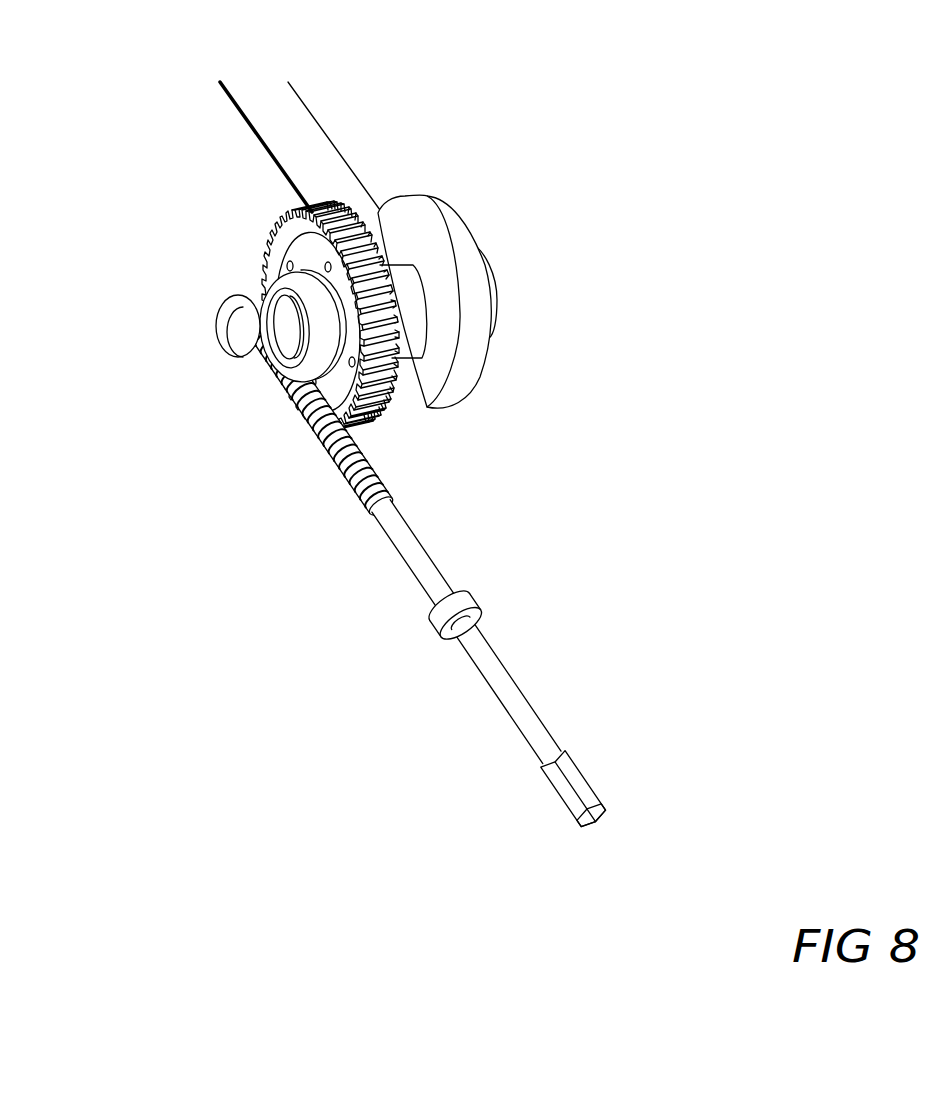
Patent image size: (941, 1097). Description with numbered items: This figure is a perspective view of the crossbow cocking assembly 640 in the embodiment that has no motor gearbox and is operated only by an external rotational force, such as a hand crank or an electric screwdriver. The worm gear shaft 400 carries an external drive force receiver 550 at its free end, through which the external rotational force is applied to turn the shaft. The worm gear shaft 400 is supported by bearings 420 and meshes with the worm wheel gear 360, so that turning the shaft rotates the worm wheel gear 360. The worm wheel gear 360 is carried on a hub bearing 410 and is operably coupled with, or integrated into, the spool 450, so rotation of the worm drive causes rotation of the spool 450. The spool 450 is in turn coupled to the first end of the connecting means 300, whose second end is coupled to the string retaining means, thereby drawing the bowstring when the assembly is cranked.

The connecting means 300 is at (300, 135).
The worm wheel gear 360 is at (298, 207).
The worm gear shaft 400 is at (333, 472).
The bearing 410 is at (318, 315).
The bearing 420 is at (228, 338).
The spool 450 is at (435, 213).
The external drive force receiver 550 is at (597, 790).
The worm drive assembly 640 is at (401, 435).